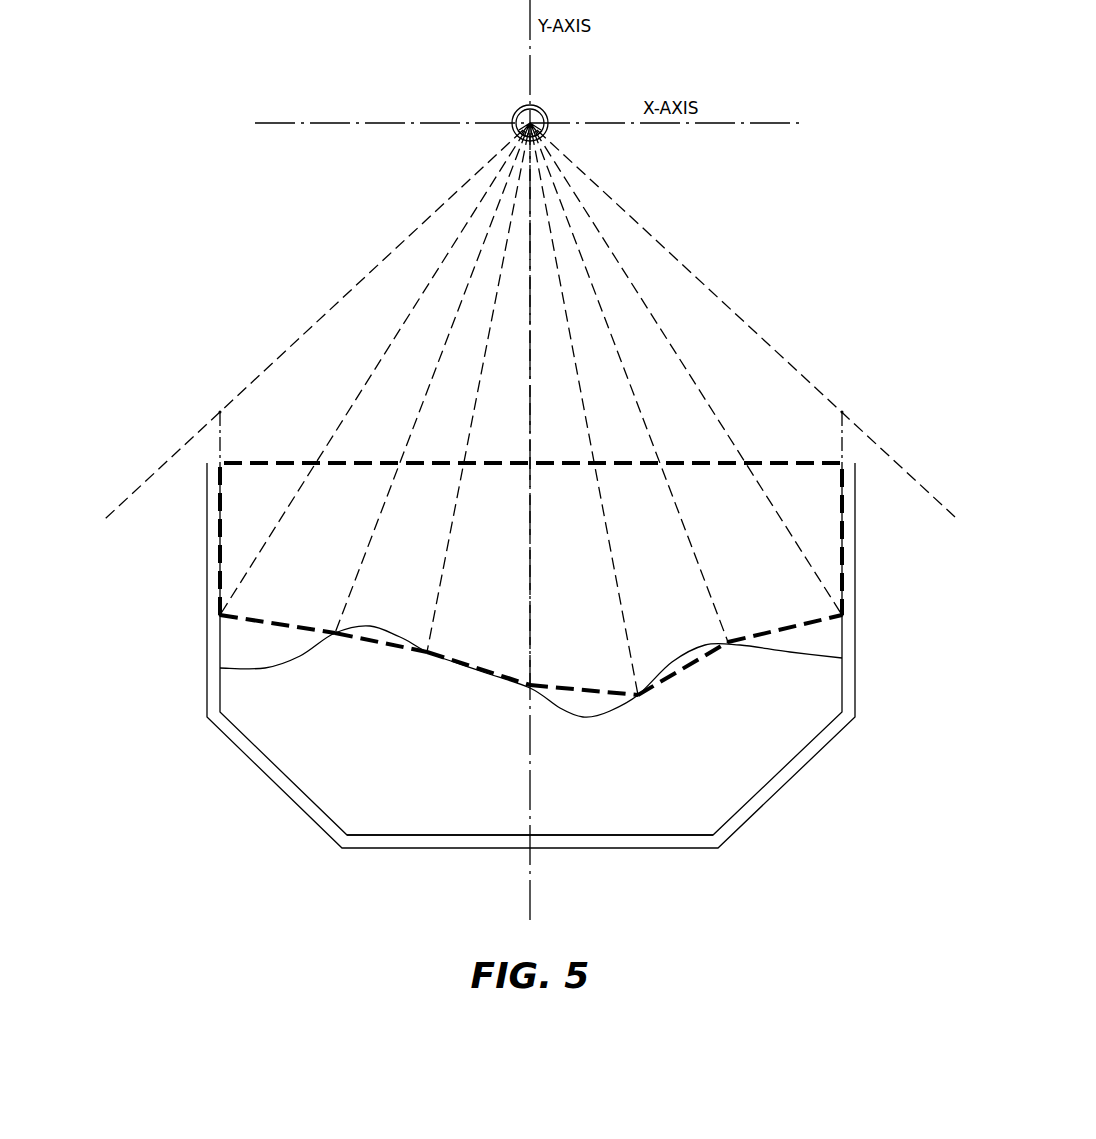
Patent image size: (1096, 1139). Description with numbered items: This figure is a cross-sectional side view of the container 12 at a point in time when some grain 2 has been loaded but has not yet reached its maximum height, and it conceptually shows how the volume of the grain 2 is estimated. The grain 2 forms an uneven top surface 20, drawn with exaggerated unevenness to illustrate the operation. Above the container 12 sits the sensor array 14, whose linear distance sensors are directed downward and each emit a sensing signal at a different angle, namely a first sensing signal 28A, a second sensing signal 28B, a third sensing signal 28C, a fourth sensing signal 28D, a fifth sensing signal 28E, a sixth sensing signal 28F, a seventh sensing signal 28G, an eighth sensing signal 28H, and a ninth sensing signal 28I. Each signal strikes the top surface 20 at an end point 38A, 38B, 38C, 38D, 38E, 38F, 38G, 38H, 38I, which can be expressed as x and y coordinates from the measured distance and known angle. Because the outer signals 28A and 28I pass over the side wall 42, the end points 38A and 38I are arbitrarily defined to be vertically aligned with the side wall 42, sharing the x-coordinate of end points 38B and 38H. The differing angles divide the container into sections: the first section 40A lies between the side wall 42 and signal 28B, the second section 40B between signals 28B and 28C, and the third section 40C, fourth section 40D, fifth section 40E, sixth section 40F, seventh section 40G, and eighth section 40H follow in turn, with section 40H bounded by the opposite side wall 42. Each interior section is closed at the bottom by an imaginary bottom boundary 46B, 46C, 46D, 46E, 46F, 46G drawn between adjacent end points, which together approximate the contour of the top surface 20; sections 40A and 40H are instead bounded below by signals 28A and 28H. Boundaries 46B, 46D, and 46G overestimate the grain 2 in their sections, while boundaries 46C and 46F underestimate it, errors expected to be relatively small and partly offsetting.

The loose particulate material 2 is at (347, 790).
The container 12 is at (222, 755).
The sensor array 14 is at (515, 108).
The top surface 20 is at (583, 717).
The first sensing signal 28A is at (770, 346).
The second sensing signal 28B is at (720, 420).
The third sensing signal 28C is at (678, 505).
The fourth sensing signal 28D is at (605, 520).
The fifth sensing signal 28E is at (532, 510).
The sixth sensing signal 28F is at (454, 518).
The seventh sensing signal 28G is at (384, 504).
The eighth sensing signal 28H is at (343, 418).
The ninth sensing signal 28I is at (292, 344).
The end point 38A is at (845, 411).
The end point 38B is at (846, 613).
The end point 38C is at (729, 648).
The end point 38D is at (639, 700).
The end point 38E is at (529, 690).
The end point 38F is at (427, 657).
The end point 38G is at (335, 640).
The end point 38H is at (218, 615).
The end point 38I is at (218, 411).
The first section 40A is at (809, 496).
The second section 40B is at (746, 546).
The third section 40C is at (660, 571).
The fourth section 40D is at (585, 576).
The fifth section 40E is at (491, 576).
The sixth section 40F is at (412, 561).
The seventh section 40G is at (332, 539).
The eighth section 40H is at (255, 496).
The side wall 42 is at (849, 538).
The bottom boundary 46B is at (775, 626).
The bottom boundary 46C is at (676, 670).
The bottom boundary 46D is at (585, 688).
The bottom boundary 46E is at (485, 666).
The bottom boundary 46F is at (385, 641).
The bottom boundary 46G is at (283, 619).